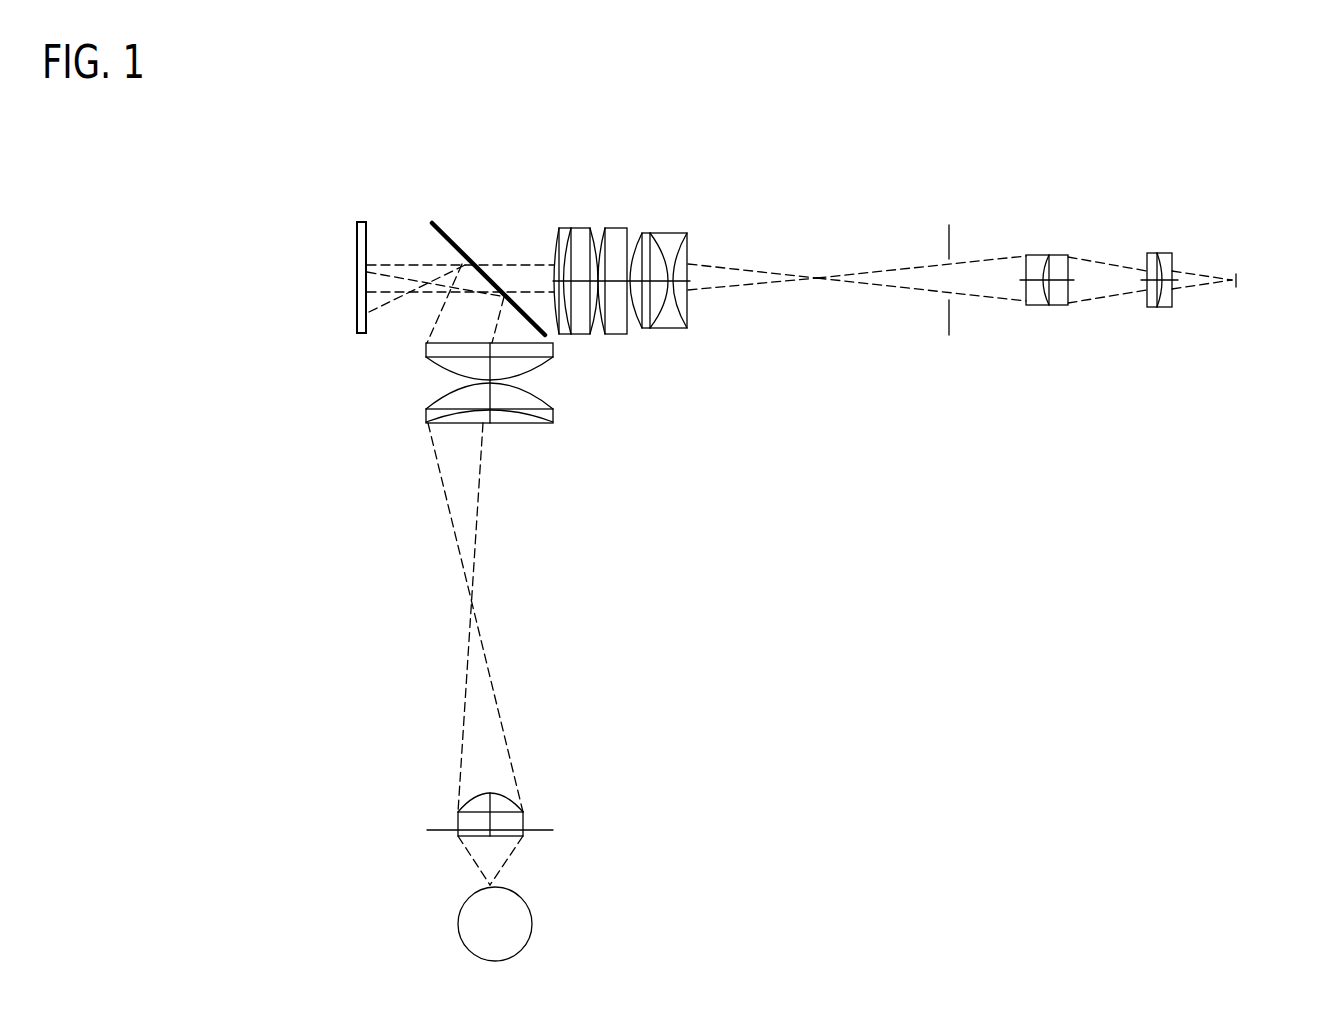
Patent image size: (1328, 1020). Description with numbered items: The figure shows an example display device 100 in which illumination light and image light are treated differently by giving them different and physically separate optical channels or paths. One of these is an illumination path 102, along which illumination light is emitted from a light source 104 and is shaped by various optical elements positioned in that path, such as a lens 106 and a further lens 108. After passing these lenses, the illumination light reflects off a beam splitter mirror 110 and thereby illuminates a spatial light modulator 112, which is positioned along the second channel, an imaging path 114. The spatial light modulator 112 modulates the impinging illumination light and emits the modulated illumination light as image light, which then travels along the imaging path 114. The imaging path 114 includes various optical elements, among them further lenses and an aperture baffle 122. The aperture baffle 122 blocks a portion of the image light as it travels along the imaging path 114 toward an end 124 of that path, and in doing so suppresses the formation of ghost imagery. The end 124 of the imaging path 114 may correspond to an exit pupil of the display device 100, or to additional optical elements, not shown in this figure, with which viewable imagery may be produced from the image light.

The display device 100 is at (897, 693).
The illumination path 102 is at (573, 586).
The light source 104 is at (479, 935).
The lens 106 is at (573, 817).
The lens 108 is at (573, 382).
The beam splitter mirror 110 is at (455, 238).
The spatial light modulator 112 is at (356, 241).
The imaging path 114 is at (826, 207).
The aperture baffle 122 is at (952, 236).
The end of the imaging path 124 is at (1256, 280).